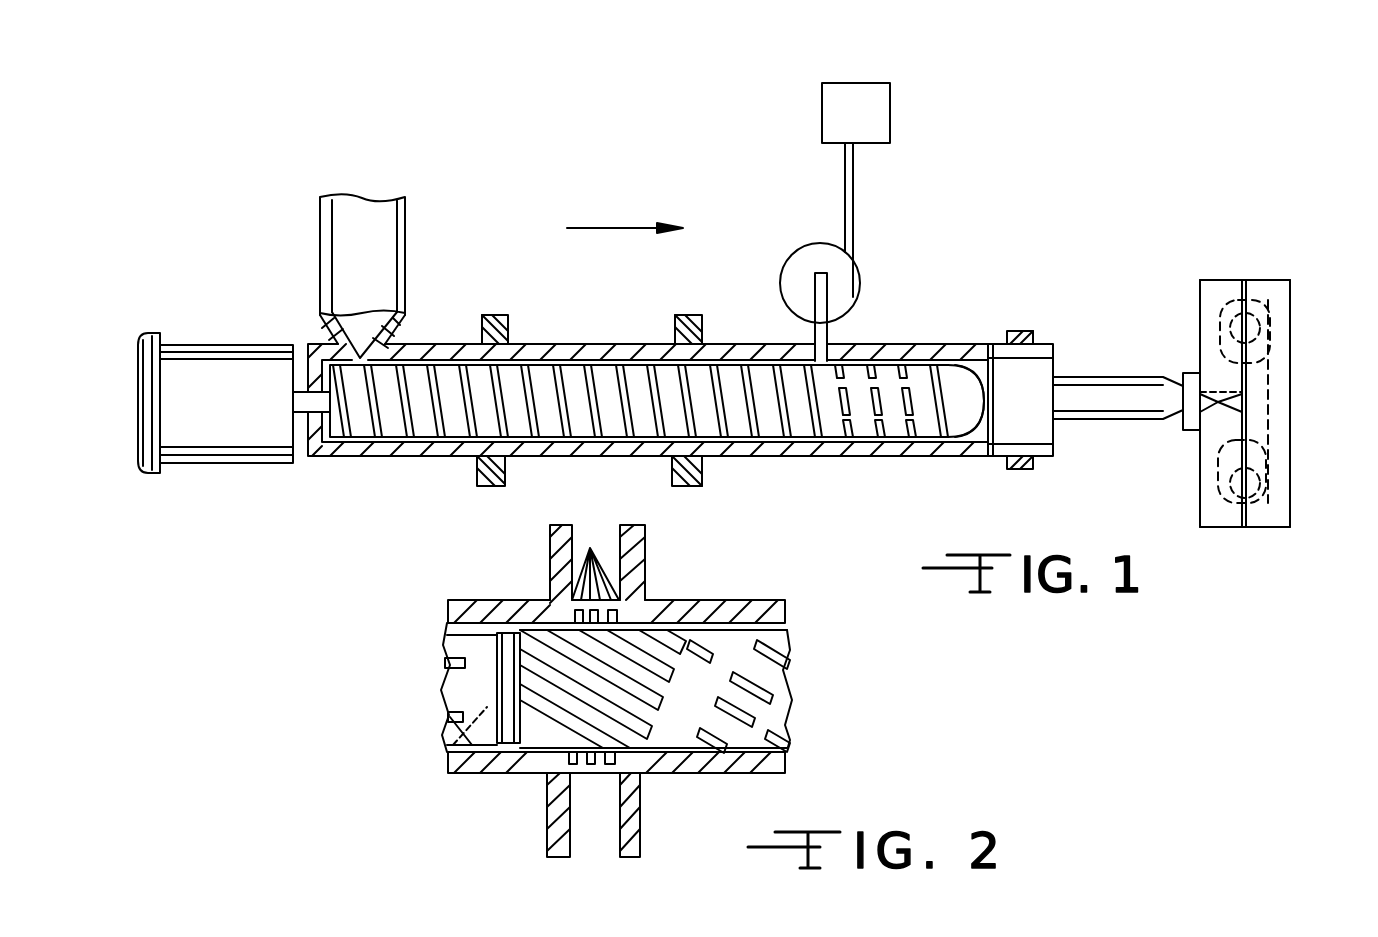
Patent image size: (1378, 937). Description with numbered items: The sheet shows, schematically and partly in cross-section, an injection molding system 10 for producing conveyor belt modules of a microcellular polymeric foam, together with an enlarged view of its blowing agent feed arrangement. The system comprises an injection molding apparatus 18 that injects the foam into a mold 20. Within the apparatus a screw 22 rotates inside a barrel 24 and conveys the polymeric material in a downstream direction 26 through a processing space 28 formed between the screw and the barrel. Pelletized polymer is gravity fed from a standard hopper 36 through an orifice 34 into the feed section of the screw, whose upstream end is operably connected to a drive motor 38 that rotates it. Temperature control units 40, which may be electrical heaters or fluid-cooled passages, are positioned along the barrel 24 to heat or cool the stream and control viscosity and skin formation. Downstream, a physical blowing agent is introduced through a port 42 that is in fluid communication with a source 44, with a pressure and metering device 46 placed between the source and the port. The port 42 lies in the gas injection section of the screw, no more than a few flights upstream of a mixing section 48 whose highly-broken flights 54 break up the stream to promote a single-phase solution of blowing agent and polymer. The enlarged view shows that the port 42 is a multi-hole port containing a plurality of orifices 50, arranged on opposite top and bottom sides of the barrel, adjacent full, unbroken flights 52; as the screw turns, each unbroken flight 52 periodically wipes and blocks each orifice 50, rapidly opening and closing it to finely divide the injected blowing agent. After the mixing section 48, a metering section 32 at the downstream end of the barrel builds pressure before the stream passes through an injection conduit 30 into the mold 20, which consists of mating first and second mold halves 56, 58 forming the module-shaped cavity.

In FIG. 1, the injection molding system 10 is at (1154, 142).
In FIG. 1, the injection molding apparatus 18 is at (740, 130).
In FIG. 1, the mold 20 is at (1238, 277).
In FIG. 1, the screw 22 is at (597, 387).
In FIG. 1, the barrel 24 is at (373, 458).
In FIG. 2, the barrel 24 is at (482, 763).
In FIG. 1, the downstream direction 26 is at (600, 227).
In FIG. 1, the processing space 28 is at (568, 360).
In FIG. 1, the injection conduit 30 is at (1101, 377).
In FIG. 1, the metering section 32 is at (1003, 357).
In FIG. 1, the orifice 34 is at (373, 330).
In FIG. 1, the hopper 36 is at (387, 227).
In FIG. 1, the drive motor 38 is at (185, 367).
In FIG. 1, the temperature control units 40 is at (492, 318).
In FIG. 1, the port 42 is at (823, 337).
In FIG. 2, the port 42 is at (590, 817).
In FIG. 1, the source 44 is at (880, 105).
In FIG. 1, the pressure and metering device 46 is at (800, 255).
In FIG. 1, the mixing section 48 is at (928, 460).
In FIG. 2, the mixing section 48 is at (770, 777).
In FIG. 2, the orifices 50 is at (590, 548).
In FIG. 2, the unbroken flights 52 is at (672, 660).
In FIG. 1, the flights 54 is at (960, 408).
In FIG. 1, the first mold half 56 is at (1262, 528).
In FIG. 1, the second mold half 58 is at (1218, 530).